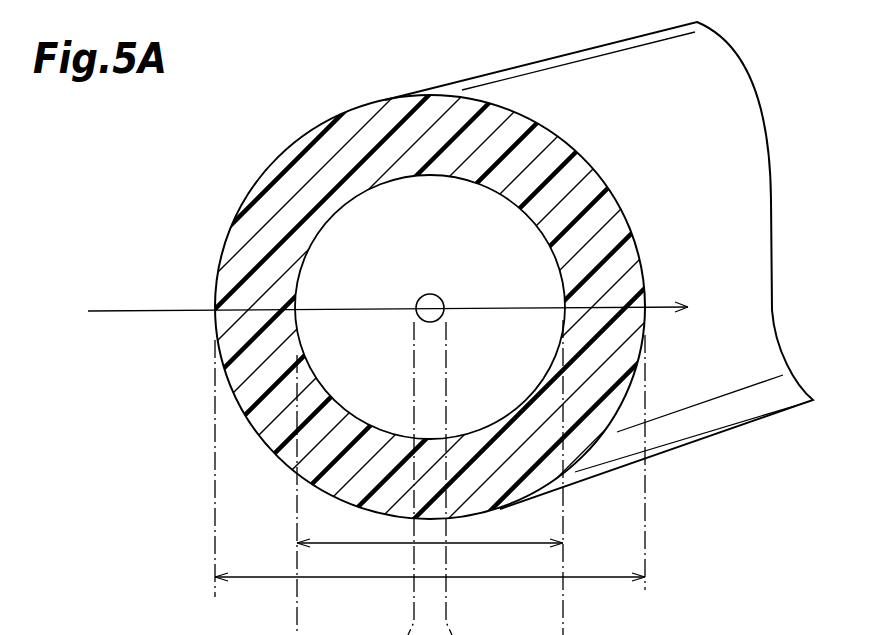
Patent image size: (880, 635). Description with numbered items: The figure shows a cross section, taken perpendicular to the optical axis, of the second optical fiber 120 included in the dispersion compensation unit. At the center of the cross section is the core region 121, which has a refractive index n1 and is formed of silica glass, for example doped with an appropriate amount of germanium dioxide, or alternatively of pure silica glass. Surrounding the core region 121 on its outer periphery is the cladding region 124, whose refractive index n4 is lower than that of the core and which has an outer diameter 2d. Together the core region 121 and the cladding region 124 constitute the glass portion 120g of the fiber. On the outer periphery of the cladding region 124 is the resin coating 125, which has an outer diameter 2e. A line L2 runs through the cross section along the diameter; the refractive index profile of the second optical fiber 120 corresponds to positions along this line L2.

The second optical fiber 120 is at (440, 317).
The glass portion 120g is at (301, 307).
The core region 121 is at (424, 298).
The cladding region 124 is at (313, 302).
The resin coating 125 is at (227, 322).
The line L2 is at (371, 313).
The outer diameter of cladding region 2d is at (430, 530).
The outer diameter of coating 2e is at (430, 565).